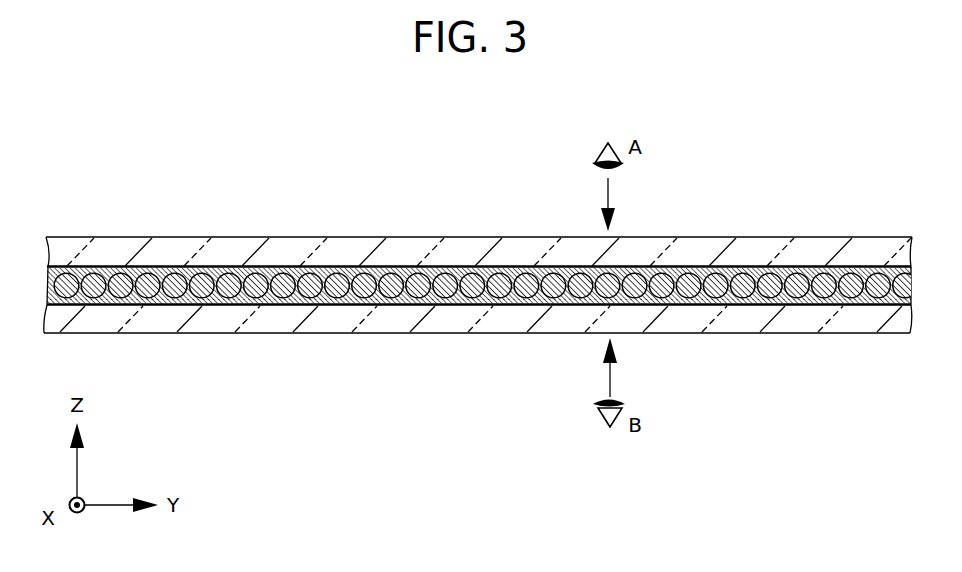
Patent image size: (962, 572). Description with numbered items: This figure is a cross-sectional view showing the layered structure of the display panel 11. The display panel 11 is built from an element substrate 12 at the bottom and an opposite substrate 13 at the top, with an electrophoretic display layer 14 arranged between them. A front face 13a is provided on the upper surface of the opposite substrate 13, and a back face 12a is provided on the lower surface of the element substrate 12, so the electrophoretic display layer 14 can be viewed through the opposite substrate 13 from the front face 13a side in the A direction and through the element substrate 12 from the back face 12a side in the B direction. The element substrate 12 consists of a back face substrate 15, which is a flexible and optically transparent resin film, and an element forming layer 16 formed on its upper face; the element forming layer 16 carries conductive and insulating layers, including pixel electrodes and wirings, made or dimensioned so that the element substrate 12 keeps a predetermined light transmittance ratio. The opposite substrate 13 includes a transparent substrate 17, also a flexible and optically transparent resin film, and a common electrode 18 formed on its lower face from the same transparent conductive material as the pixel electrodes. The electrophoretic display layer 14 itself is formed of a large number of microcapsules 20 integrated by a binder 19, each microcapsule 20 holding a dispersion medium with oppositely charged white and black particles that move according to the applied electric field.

The display panel 11 is at (481, 264).
The element substrate 12 is at (477, 366).
The back face 12a is at (513, 333).
The opposite substrate 13 is at (479, 197).
The front face 13a is at (514, 237).
The electrophoretic display layer 14 is at (482, 210).
The back face substrate 15 is at (258, 318).
The element forming layer 16 is at (291, 303).
The transparent substrate 17 is at (213, 240).
The common electrode 18 is at (162, 270).
The binder 19 is at (374, 265).
The microcapsules 20 is at (325, 267).